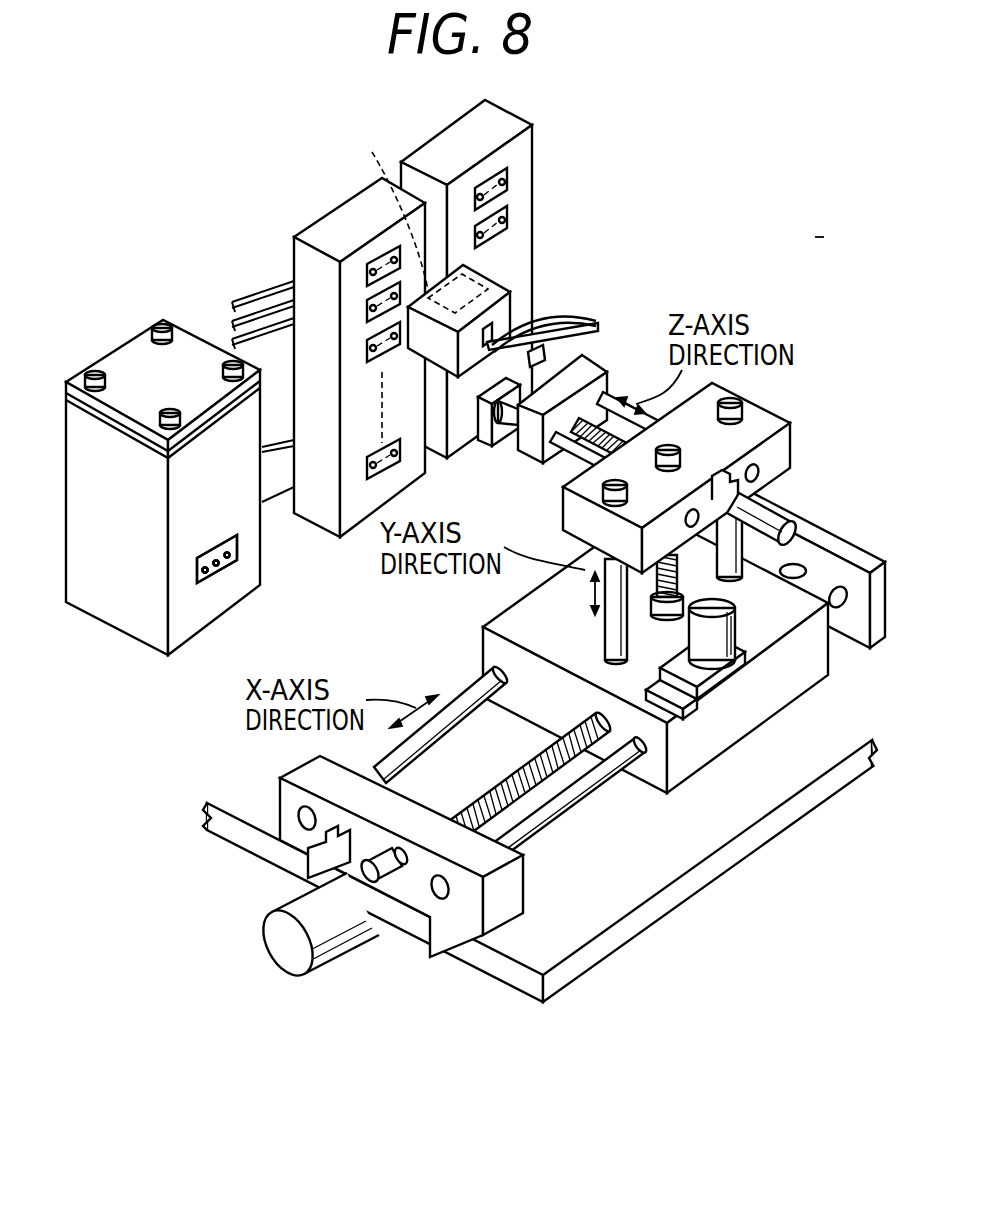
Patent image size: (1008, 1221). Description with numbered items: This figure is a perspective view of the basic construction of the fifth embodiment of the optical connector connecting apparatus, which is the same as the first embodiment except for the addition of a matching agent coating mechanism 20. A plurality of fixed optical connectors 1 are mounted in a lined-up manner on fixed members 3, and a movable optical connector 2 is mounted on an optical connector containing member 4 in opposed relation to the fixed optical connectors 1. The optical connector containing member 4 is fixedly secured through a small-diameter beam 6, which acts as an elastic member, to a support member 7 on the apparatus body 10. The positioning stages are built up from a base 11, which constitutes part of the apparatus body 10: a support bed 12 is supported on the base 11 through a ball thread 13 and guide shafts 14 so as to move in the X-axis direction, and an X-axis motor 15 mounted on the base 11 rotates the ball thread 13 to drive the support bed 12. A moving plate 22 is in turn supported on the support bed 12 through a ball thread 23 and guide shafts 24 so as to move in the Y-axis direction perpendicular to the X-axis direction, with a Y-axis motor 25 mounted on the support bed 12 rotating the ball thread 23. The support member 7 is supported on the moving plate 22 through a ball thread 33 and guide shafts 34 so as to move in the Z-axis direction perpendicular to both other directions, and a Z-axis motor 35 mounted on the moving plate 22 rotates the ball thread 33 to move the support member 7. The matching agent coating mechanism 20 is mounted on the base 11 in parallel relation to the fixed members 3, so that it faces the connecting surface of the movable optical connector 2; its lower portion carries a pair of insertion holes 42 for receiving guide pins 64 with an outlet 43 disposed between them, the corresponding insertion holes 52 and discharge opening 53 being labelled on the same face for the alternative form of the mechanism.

The fixed optical connectors 1 is at (383, 262).
The movable optical connector 2 is at (490, 278).
The fixed members 3 is at (413, 308).
The optical connector containing member 4 is at (512, 300).
The small-diameter beam 6 is at (560, 334).
The support member 7 is at (590, 368).
The apparatus body 10 is at (544, 625).
The base 11 is at (712, 868).
The support bed 12 is at (740, 723).
The ball thread 13 is at (587, 800).
The guide shafts 14 is at (560, 843).
The X-axis motor 15 is at (318, 918).
The matching agent coating mechanism 20 is at (188, 347).
The moving plate 22 is at (768, 416).
The ball thread 23 is at (700, 585).
The guide shafts 24 is at (606, 640).
The Y-axis motor 25 is at (737, 678).
The ball thread 33 is at (580, 452).
The guide shafts 34 is at (600, 402).
The Z-axis motor 35 is at (775, 506).
The insertion holes 42 is at (207, 568).
The outlet 43 is at (228, 556).
The insertion holes 52 is at (257, 605).
The opening 53 is at (277, 586).
The guide pins 64 is at (395, 283).